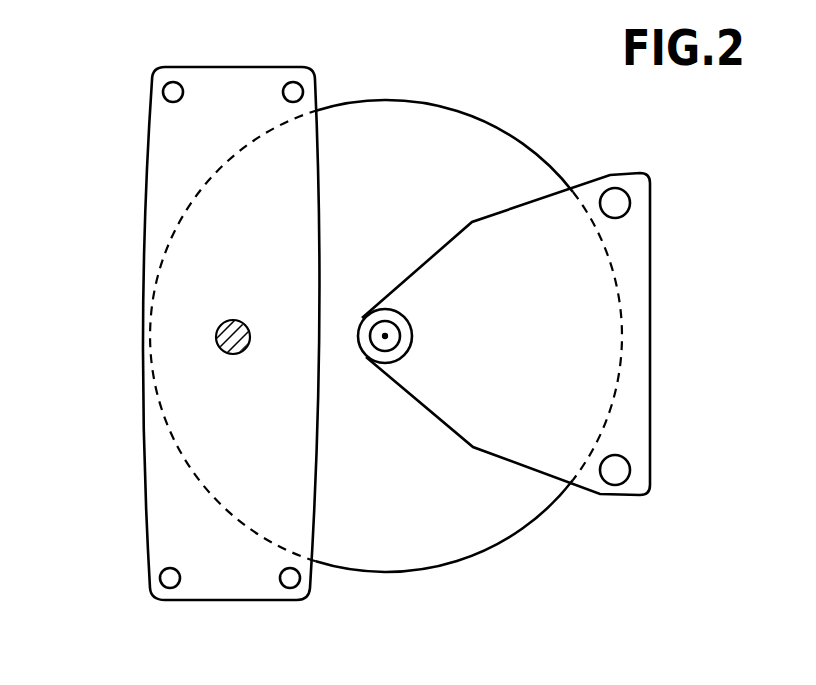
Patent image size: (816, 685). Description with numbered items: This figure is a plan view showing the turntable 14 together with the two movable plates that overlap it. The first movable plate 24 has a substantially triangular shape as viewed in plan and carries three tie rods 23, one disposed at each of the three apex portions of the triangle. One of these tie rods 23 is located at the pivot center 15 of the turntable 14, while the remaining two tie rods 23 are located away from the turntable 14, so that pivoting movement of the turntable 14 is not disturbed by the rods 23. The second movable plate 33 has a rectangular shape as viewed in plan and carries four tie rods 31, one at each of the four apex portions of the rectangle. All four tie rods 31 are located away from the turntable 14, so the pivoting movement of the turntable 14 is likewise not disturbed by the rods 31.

The turntable 14 is at (528, 508).
The pivot center 15 is at (385, 336).
The tie rods 23 is at (615, 203).
The first movable plate 24 is at (637, 322).
The tie rods 31 is at (173, 92).
The second movable plate 33 is at (166, 168).